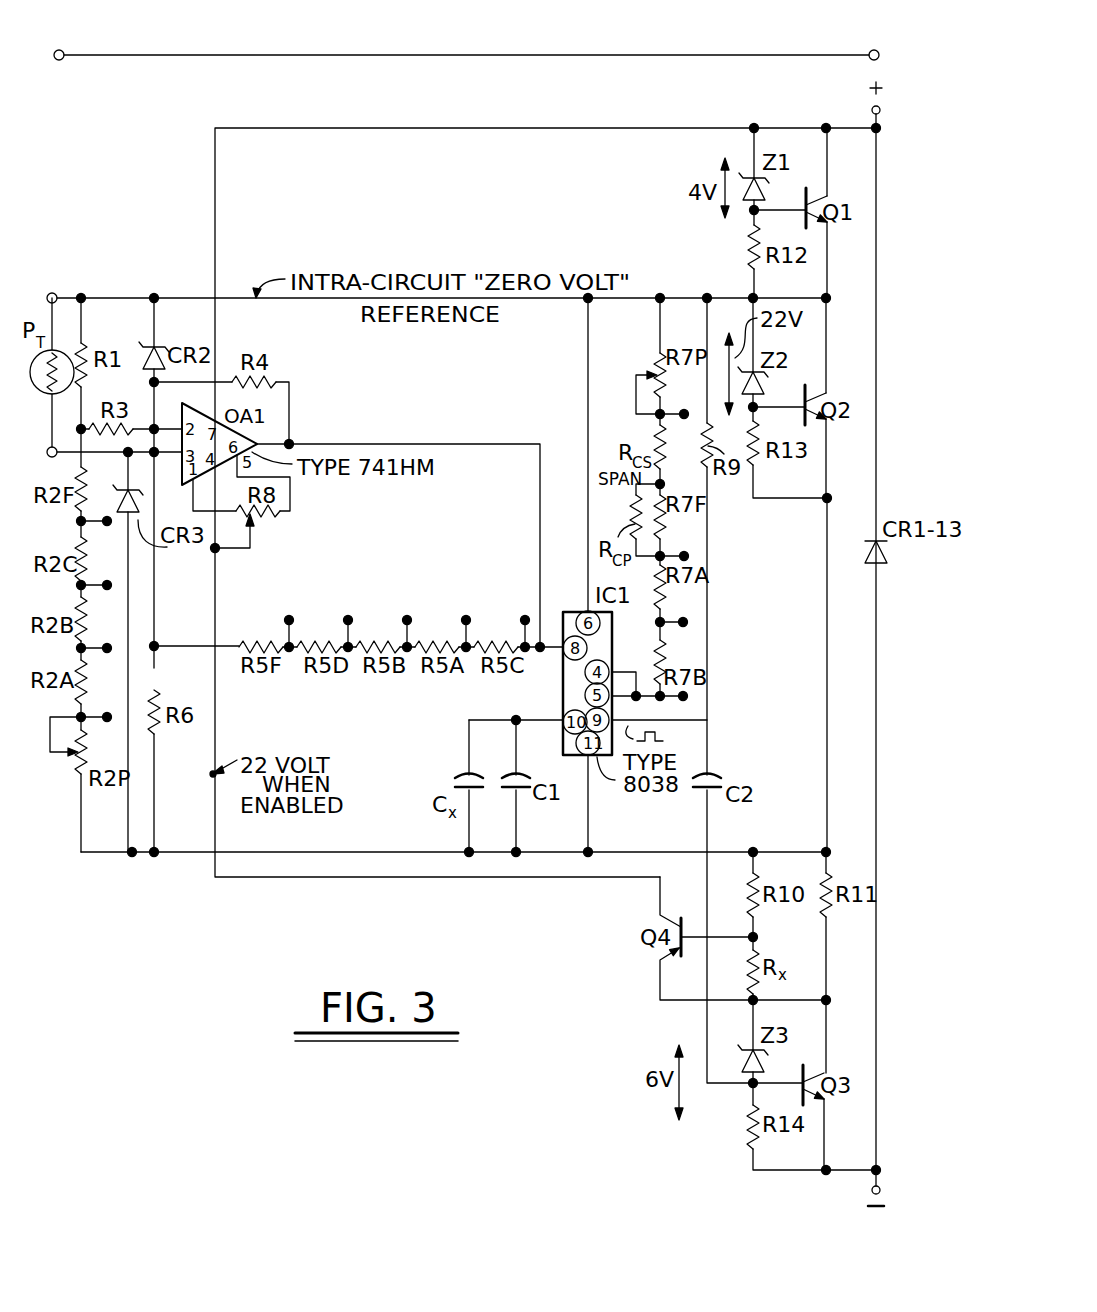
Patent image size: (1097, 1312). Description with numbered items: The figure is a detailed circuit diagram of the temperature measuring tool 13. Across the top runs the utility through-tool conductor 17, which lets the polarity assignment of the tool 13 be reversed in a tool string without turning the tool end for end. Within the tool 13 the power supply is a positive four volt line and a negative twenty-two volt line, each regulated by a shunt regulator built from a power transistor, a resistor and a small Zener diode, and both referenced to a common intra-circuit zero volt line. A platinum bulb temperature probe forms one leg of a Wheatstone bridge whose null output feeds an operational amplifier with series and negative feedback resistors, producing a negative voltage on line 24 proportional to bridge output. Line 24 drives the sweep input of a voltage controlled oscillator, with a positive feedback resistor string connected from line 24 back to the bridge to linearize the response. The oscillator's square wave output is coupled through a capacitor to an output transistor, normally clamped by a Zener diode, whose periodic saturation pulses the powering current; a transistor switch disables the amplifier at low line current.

The through-tool conductor 17 is at (686, 55).
The temperature measuring tool 13 is at (418, 558).
The output line 24 is at (432, 444).